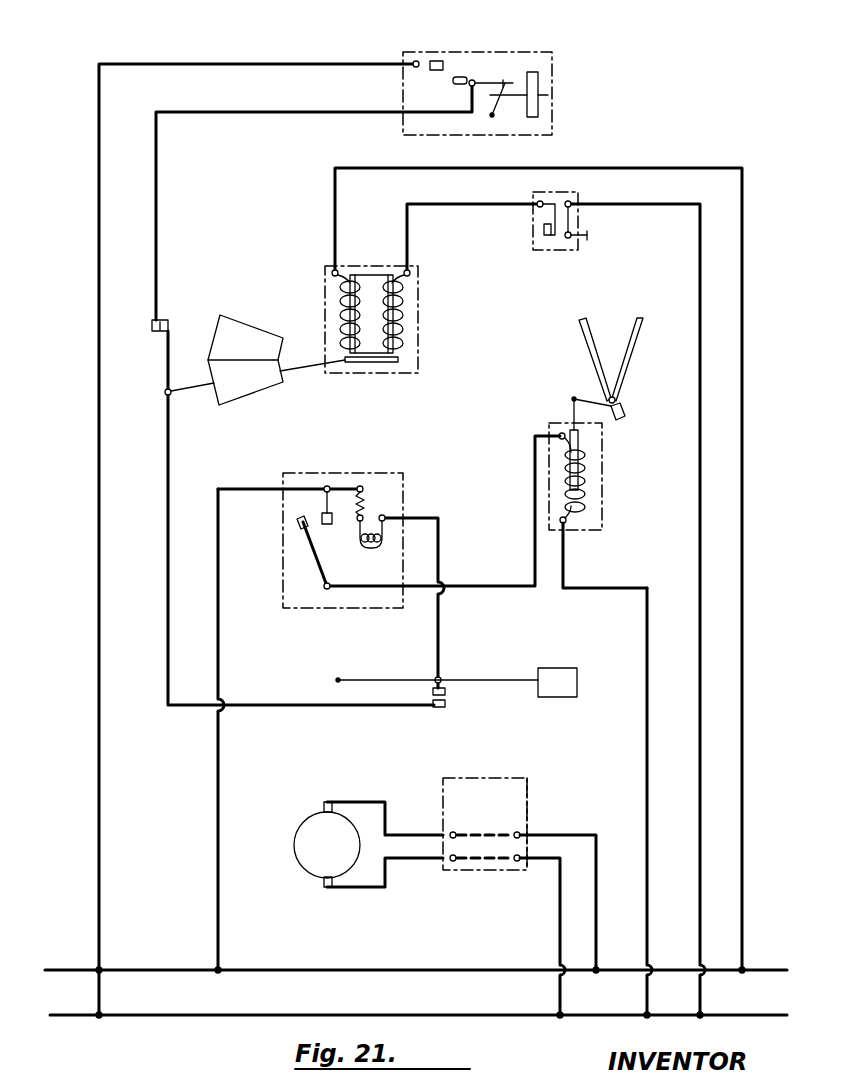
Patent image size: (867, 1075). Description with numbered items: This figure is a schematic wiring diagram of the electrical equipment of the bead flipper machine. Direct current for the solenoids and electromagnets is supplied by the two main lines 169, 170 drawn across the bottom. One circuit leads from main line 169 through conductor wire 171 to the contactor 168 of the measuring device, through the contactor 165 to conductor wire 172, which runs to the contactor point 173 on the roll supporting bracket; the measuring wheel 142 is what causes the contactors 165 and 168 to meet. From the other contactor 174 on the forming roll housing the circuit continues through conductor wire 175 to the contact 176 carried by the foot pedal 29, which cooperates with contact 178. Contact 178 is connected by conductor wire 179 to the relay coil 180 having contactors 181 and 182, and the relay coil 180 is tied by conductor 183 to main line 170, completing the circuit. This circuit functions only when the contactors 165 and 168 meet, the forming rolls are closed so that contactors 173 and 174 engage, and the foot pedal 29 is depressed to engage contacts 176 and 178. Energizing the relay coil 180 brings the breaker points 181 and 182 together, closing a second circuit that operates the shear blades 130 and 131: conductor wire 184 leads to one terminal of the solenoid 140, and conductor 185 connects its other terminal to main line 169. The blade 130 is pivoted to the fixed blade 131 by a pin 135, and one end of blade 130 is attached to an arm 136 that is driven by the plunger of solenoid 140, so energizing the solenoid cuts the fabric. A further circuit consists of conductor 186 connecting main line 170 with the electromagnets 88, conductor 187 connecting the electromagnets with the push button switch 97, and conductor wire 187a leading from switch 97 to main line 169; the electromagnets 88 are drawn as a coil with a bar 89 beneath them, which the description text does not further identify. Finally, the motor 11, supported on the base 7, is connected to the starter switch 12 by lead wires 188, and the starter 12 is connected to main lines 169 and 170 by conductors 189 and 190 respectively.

The base 7 is at (490, 784).
The motor 11 is at (315, 868).
The starter switch 12 is at (528, 810).
The foot pedal 29 is at (500, 682).
The electromagnets 88 is at (336, 301).
The solenoid plunger bar 89 is at (382, 362).
The push button switch 97 is at (540, 246).
The shear blade 130 is at (640, 344).
The shear blade 131 is at (580, 330).
The pin 135 is at (615, 402).
The arm 136 is at (582, 398).
The solenoid 140 is at (582, 493).
The measuring wheel 142 is at (548, 95).
The contactor 165 is at (466, 78).
The contactor 168 is at (438, 60).
The main line 169 is at (80, 1018).
The main line 170 is at (82, 968).
The conductor wire 171 is at (98, 562).
The conductor wire 172 is at (330, 105).
The contactor point 173 is at (160, 320).
The contactor 174 is at (168, 322).
The conductor wire 175 is at (170, 474).
The contact 176 is at (438, 708).
The contact 178 is at (432, 694).
The conductor wire 179 is at (440, 544).
The relay coil 180 is at (366, 548).
The contactor 181 is at (332, 496).
The contactor 182 is at (310, 561).
The conductor 183 is at (218, 660).
The conductor wire 184 is at (472, 590).
The conductor 185 is at (646, 704).
The conductor 186 is at (742, 666).
The conductor 187 is at (442, 204).
The conductor wire 187a is at (700, 465).
The lead wires 188 is at (407, 855).
The conductor 189 is at (560, 930).
The conductor 190 is at (562, 837).